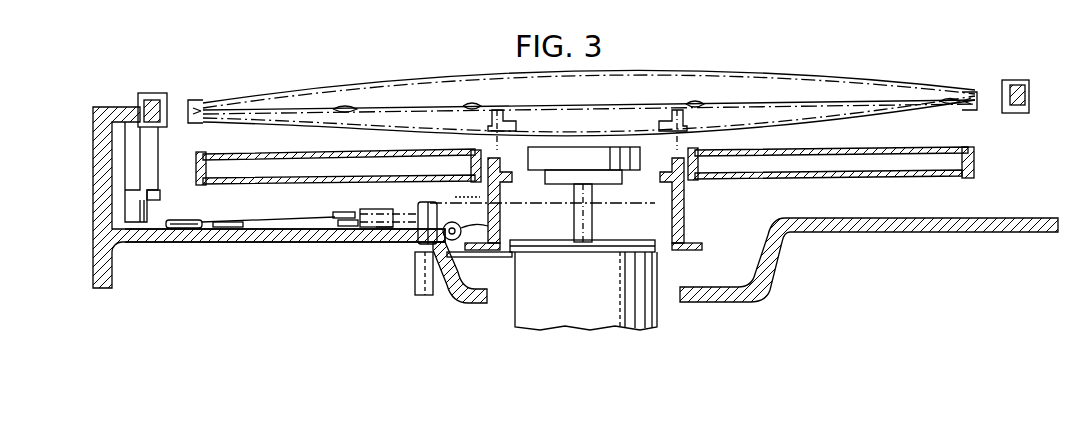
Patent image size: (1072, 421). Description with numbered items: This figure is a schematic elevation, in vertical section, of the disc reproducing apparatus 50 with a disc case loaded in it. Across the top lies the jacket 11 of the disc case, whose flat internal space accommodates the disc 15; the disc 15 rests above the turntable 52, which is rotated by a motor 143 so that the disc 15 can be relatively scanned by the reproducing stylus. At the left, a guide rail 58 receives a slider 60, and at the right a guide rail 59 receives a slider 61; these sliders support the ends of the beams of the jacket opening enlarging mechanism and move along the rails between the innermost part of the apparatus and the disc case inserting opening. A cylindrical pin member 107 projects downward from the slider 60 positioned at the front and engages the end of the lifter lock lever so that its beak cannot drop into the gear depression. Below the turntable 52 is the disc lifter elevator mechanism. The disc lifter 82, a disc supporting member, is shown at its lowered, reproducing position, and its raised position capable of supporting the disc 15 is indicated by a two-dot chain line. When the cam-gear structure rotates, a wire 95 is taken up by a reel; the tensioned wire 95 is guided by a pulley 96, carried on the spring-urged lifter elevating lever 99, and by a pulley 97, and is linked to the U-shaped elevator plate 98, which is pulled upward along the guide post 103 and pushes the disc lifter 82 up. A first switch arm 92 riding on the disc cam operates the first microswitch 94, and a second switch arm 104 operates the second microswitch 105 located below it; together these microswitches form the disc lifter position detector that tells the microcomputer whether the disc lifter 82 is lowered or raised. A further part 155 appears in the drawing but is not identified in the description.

The jacket 11 is at (440, 80).
The disc 15 is at (332, 156).
The end cap 155 is at (251, 156).
The reproducing apparatus 50 is at (785, 58).
The turntable 52 is at (893, 173).
The guide rail 58 is at (138, 105).
The guide rail 59 is at (1029, 98).
The slider 60 is at (171, 103).
The slider 61 is at (1011, 80).
The disc lifter 82 is at (688, 130).
The first switch arm 92 is at (340, 211).
The first microswitch 94 is at (390, 209).
The wire 95 is at (282, 228).
The pulley 96 is at (222, 229).
The pulley 97 is at (491, 222).
The elevator plate 98 is at (607, 207).
The lifter elevating lever 99 is at (178, 220).
The guide post 103 is at (422, 210).
The second switch arm 104 is at (348, 230).
The second microswitch 105 is at (380, 230).
The cylindrical pin member 107 is at (150, 205).
The motor 143 is at (653, 306).